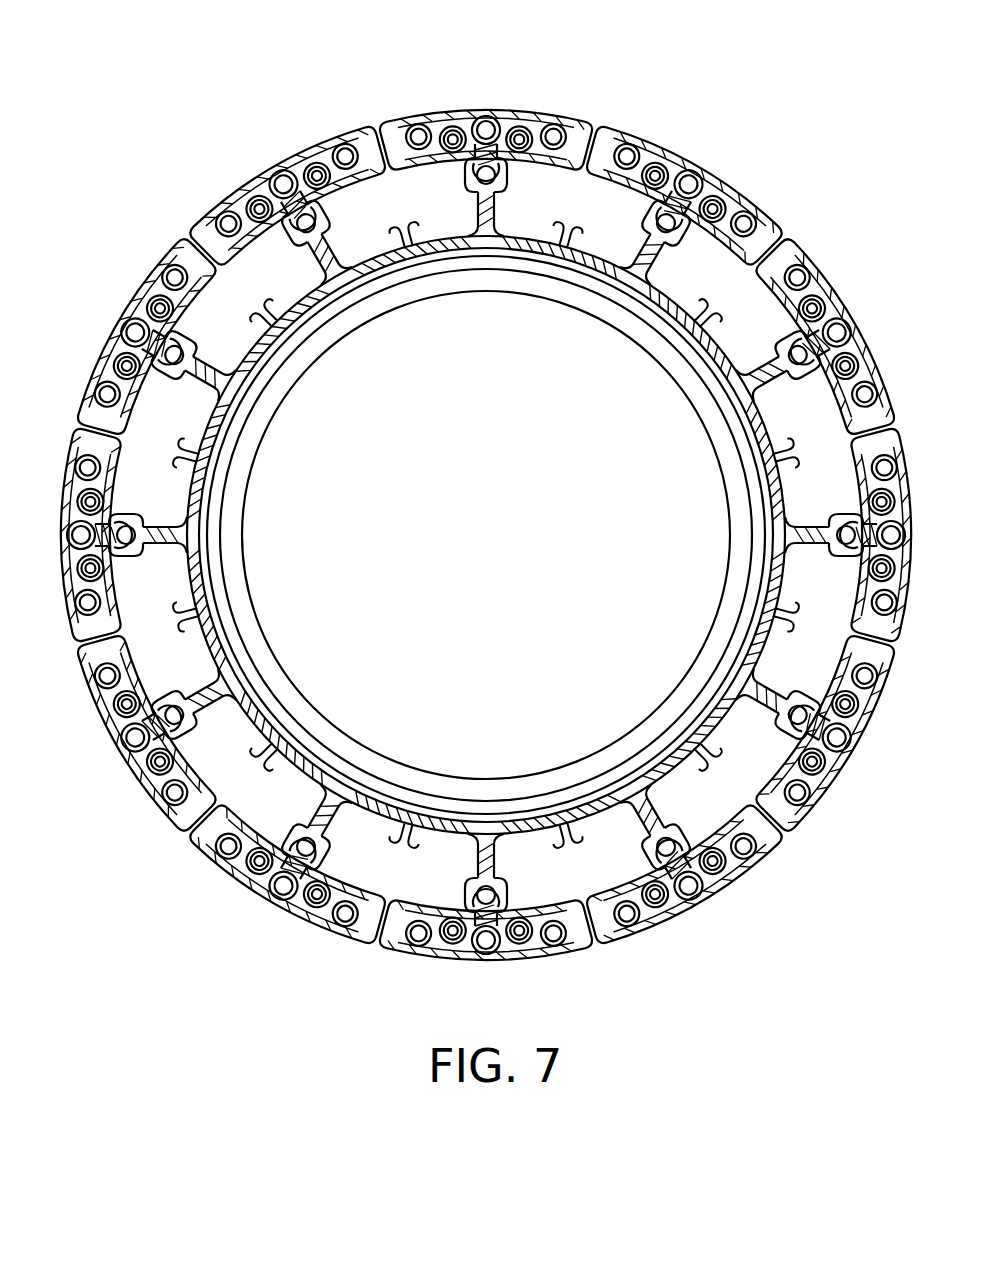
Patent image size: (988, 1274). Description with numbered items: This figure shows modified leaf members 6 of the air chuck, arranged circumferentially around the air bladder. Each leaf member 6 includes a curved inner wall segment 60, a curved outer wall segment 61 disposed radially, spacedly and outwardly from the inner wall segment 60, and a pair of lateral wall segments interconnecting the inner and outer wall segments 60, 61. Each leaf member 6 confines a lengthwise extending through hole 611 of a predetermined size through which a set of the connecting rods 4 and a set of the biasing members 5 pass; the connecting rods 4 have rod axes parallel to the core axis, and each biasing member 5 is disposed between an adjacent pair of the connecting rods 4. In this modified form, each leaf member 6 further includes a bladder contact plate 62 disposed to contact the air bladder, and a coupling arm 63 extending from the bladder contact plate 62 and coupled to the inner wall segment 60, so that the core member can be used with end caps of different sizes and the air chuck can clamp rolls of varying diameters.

The connecting rod 4 is at (566, 134).
The biasing member 5 is at (520, 136).
The leaf member 6 is at (460, 118).
The inner wall segment 60 is at (455, 150).
The outer wall segment 61 is at (481, 114).
The through hole 611 is at (648, 146).
The bladder contact plate 62 is at (487, 195).
The coupling arm 63 is at (492, 210).